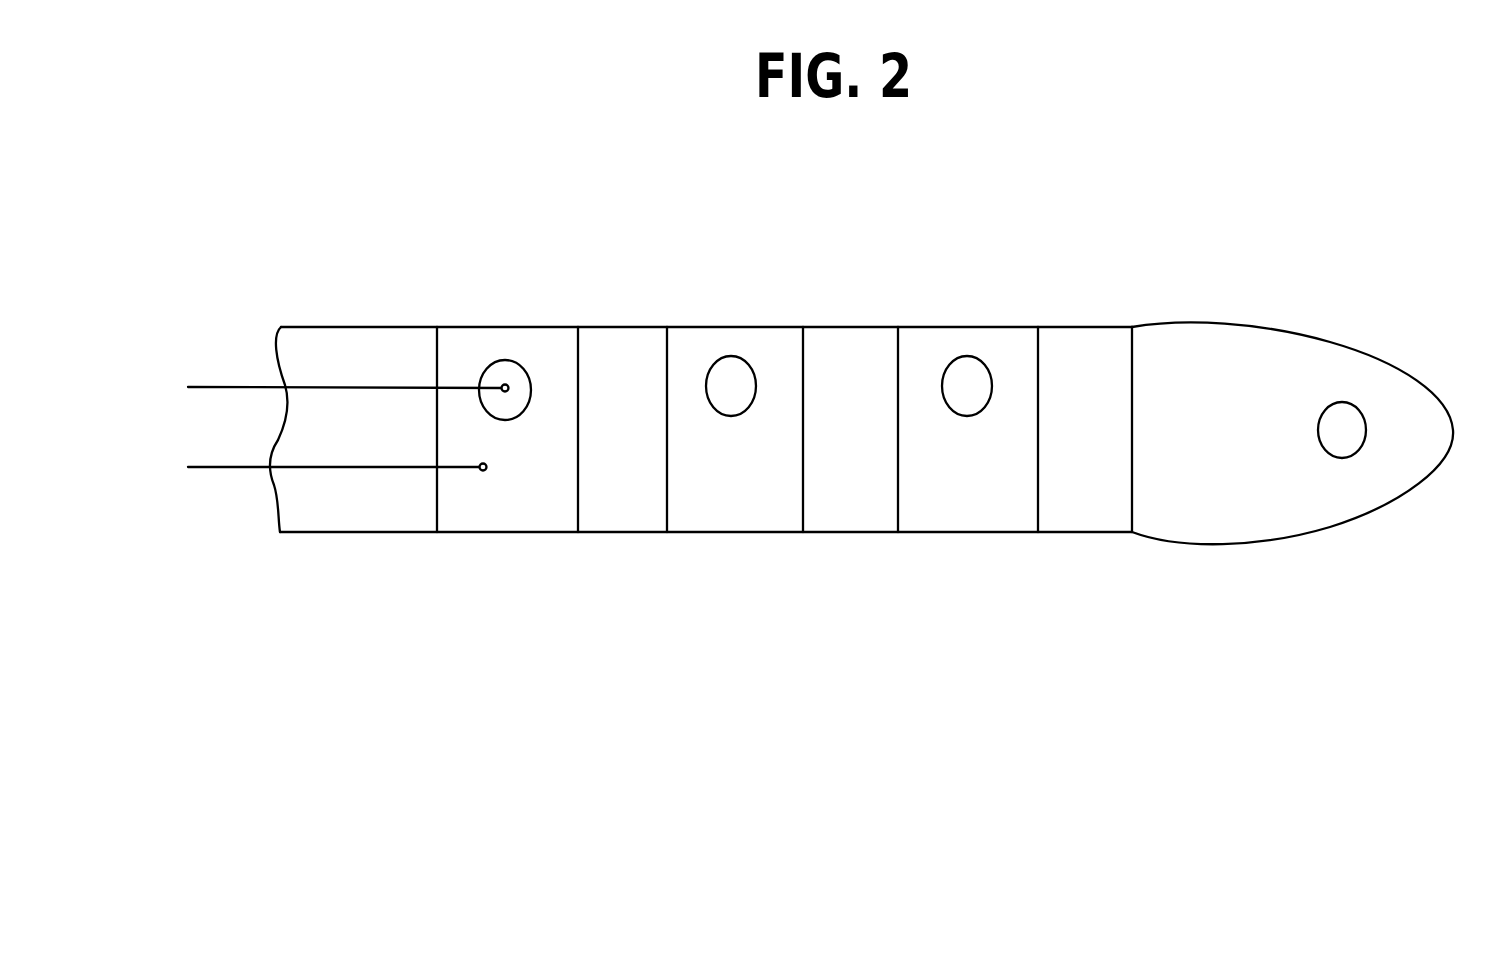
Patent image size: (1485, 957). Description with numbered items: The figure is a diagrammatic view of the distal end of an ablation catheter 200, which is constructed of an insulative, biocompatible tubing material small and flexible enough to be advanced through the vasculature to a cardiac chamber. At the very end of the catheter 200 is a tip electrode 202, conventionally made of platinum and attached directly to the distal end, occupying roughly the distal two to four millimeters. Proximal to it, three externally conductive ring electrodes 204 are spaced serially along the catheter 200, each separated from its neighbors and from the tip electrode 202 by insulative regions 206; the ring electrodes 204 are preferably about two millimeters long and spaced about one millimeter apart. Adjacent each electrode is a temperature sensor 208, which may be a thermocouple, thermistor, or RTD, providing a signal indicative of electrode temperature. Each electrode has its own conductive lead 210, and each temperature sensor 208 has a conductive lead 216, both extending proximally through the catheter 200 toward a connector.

The catheter 200 is at (1153, 311).
The tip electrode 202 is at (1310, 350).
The ring electrode 204 is at (485, 515).
The insulative region 206 is at (867, 350).
The temperature sensor 208 is at (515, 373).
The conductive lead 210 is at (242, 470).
The conductive lead 216 is at (243, 386).